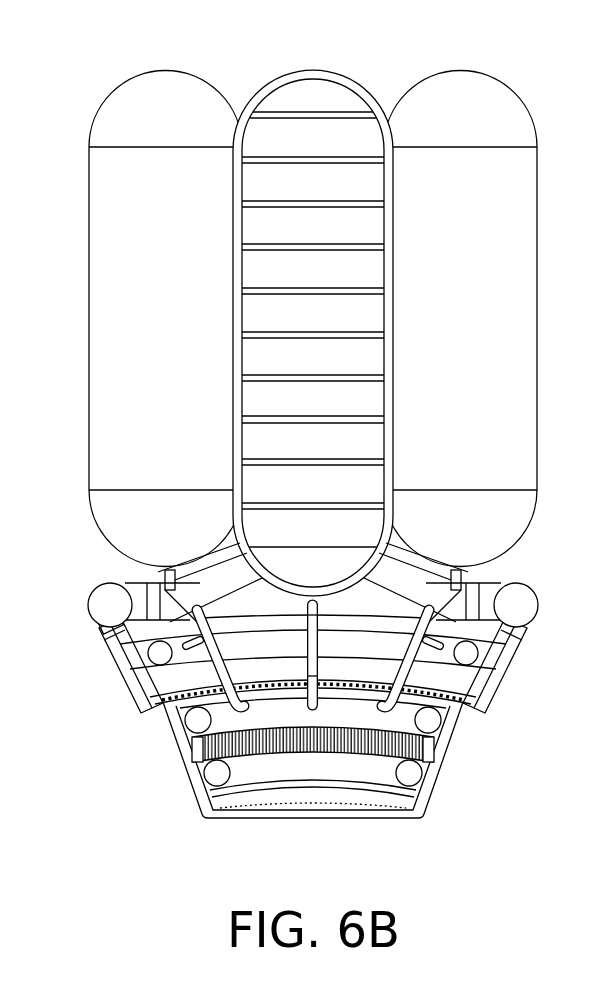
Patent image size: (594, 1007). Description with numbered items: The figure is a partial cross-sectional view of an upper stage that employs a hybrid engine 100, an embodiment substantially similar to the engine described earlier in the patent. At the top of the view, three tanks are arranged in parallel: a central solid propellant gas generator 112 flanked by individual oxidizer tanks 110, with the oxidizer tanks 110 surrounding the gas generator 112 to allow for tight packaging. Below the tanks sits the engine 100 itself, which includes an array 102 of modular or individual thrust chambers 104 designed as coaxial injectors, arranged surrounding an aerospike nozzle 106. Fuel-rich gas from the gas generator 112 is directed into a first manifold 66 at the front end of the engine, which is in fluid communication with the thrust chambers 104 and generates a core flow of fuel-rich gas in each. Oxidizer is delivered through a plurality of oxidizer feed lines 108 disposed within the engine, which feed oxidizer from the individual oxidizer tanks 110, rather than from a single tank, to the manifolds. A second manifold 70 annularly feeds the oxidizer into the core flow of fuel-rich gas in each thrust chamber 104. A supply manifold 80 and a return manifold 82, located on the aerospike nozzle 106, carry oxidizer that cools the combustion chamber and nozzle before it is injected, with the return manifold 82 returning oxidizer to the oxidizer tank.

The first manifold 66 is at (107, 590).
The second manifold 70 is at (98, 644).
The supply manifold 80 is at (196, 722).
The return manifold 82 is at (217, 777).
The hybrid engine 100 is at (305, 727).
The array of thrust chambers 102 is at (111, 684).
The thrust chamber 104 is at (517, 643).
The aerospike nozzle 106 is at (428, 790).
The oxidizer feed line 108 is at (158, 656).
The oxidizer tank 110 is at (527, 305).
The solid propellant gas generator 112 is at (313, 79).